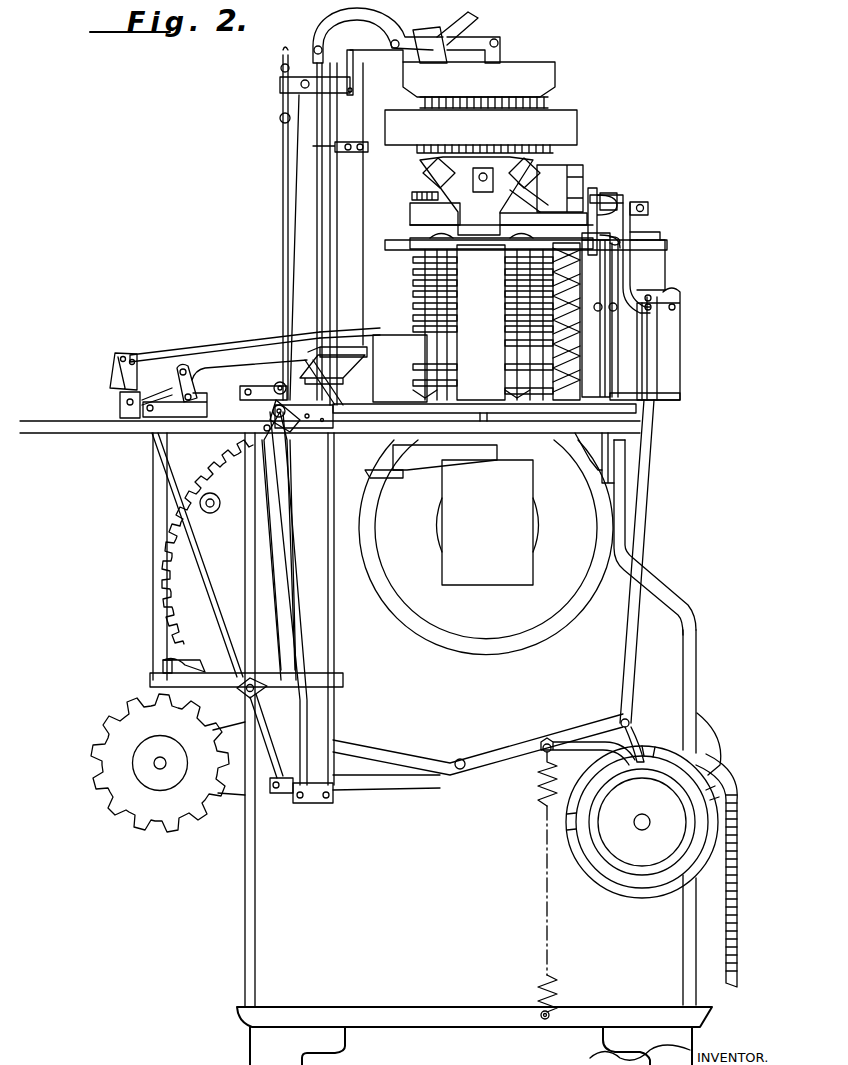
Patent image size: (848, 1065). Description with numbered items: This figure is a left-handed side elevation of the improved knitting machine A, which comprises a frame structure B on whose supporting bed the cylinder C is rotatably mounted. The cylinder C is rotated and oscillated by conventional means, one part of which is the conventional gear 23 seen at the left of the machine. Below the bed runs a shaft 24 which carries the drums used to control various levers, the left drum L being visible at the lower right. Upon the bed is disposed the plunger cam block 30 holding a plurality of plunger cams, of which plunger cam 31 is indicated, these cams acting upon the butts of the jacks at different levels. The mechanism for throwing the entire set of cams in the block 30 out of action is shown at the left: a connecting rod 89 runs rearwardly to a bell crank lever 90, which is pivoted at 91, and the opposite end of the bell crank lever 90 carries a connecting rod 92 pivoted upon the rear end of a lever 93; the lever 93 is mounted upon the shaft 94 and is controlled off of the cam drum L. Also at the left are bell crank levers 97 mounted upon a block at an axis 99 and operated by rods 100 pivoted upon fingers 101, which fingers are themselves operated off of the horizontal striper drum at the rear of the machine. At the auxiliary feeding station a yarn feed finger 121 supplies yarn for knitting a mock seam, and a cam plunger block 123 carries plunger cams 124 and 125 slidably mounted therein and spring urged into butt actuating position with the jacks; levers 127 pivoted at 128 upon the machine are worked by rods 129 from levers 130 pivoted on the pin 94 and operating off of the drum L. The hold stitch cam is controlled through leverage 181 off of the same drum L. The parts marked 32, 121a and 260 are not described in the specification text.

The knitting machine A is at (701, 616).
The frame structure B is at (250, 936).
The cylinder C is at (553, 153).
The left drum L is at (587, 843).
The gear 23 is at (187, 587).
The shaft 24 is at (645, 825).
The plunger cam block 30 is at (587, 270).
The plunger cam 31 is at (582, 242).
The spring 32 is at (572, 276).
The connecting rod 89 is at (217, 370).
The bell crank lever 90 is at (193, 378).
The pivot 91 is at (206, 405).
The connecting rod 92 is at (207, 584).
The lever 93 is at (283, 792).
The shaft 94 is at (461, 771).
The bell crank lever 97 is at (124, 377).
The axis 99 is at (118, 404).
The rod 100 is at (153, 650).
The finger 101 is at (222, 640).
The yarn feed finger 121 is at (445, 33).
The rod 121a is at (290, 237).
The cam plunger block 123 is at (398, 340).
The plunger cam 124 is at (343, 348).
The plunger cam 125 is at (352, 367).
The lever 127 is at (333, 394).
The pivot 128 is at (326, 420).
The rod 129 is at (288, 613).
The lever 130 is at (320, 788).
The leverage 181 is at (653, 428).
The housing 260 is at (635, 308).